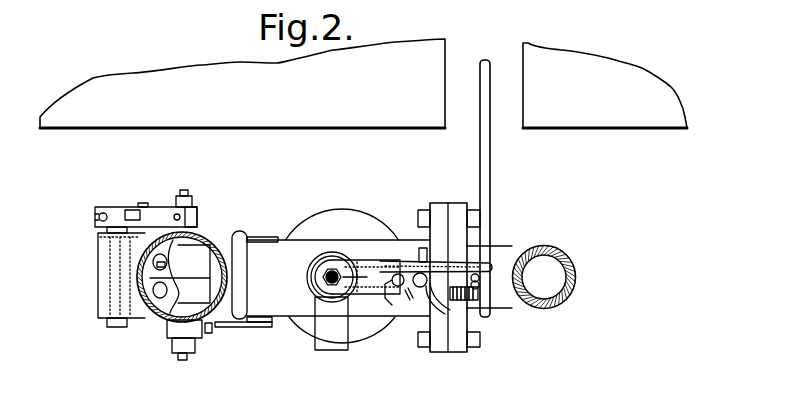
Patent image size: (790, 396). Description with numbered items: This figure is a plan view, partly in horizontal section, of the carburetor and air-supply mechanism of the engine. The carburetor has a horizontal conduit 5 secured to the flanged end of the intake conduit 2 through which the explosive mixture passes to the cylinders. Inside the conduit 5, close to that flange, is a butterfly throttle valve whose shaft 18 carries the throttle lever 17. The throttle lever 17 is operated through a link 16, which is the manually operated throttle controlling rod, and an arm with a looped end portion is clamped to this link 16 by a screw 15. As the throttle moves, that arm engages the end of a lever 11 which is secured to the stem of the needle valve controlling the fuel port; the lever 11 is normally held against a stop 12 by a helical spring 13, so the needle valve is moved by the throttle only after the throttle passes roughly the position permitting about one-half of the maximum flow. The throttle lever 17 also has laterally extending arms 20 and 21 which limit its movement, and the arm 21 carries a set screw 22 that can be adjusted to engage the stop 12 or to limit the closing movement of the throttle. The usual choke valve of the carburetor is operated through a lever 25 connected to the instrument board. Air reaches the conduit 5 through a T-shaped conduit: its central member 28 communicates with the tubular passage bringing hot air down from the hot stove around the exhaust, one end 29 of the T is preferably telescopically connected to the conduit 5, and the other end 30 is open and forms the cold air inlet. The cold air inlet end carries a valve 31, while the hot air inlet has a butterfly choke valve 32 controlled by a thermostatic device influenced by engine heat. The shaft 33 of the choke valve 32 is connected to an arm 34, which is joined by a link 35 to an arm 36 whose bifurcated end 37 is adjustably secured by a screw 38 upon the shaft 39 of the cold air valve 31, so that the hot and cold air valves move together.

The intake conduit 2 is at (563, 257).
The horizontal conduit 5 is at (382, 247).
The lever 11 is at (455, 263).
The stop 12 is at (377, 280).
The helical spring 13 is at (337, 253).
The screw 15 is at (493, 293).
The link 16 is at (485, 197).
The throttle lever 17 is at (463, 310).
The shaft 18 is at (433, 297).
The arm 20 is at (423, 253).
The arm 21 is at (397, 317).
The set screw 22 is at (402, 313).
The lever 25 is at (240, 327).
The central member 28 is at (212, 242).
The end 29 is at (238, 233).
The end 30 is at (100, 298).
The valve 31 is at (110, 252).
The choke valve 32 is at (163, 315).
The shaft 33 is at (183, 355).
The arm 34 is at (193, 212).
The link 35 is at (158, 213).
The arm 36 is at (137, 207).
The bifurcated end 37 is at (95, 218).
The screw 38 is at (101, 213).
The shaft 39 is at (110, 328).